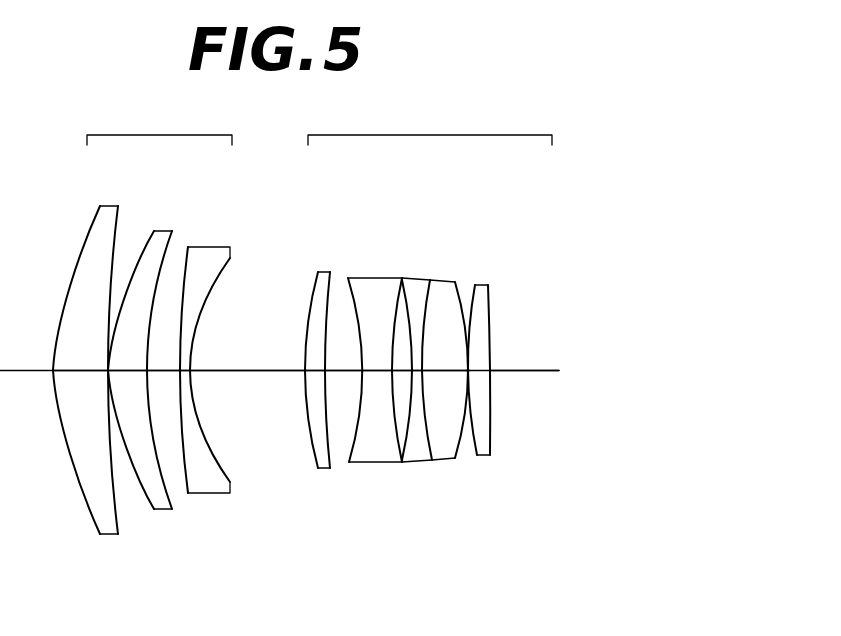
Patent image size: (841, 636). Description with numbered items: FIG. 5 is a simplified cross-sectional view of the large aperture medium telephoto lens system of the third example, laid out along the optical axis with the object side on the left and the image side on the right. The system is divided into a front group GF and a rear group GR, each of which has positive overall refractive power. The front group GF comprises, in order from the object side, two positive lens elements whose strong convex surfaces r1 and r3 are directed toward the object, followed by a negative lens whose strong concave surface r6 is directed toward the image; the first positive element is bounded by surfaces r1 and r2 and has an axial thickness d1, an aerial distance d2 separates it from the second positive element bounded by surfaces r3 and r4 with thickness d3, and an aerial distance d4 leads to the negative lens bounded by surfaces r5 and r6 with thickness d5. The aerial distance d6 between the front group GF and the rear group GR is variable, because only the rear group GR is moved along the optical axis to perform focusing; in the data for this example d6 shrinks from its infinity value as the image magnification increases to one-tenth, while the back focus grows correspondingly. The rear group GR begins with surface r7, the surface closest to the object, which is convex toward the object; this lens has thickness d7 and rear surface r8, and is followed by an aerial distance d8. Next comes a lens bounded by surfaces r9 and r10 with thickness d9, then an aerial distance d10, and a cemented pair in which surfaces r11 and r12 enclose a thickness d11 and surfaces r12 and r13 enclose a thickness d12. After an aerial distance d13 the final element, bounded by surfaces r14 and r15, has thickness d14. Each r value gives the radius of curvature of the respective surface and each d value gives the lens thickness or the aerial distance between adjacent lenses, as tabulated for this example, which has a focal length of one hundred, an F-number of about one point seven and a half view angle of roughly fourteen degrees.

The front group GF is at (159, 123).
The rear group GR is at (430, 123).
The first lens surface r1 is at (102, 206).
The second lens surface r2 is at (115, 207).
The third lens surface r3 is at (155, 230).
The fourth lens surface r4 is at (172, 229).
The fifth lens surface r5 is at (190, 246).
The sixth lens surface r6 is at (232, 247).
The seventh lens surface r7 is at (319, 271).
The eighth lens surface r8 is at (331, 271).
The ninth lens surface r9 is at (349, 277).
The tenth lens surface r10 is at (403, 278).
The eleventh lens surface r11 is at (403, 279).
The twelfth lens surface r12 is at (445, 280).
The thirteenth lens surface r13 is at (478, 282).
The fourteenth lens surface r14 is at (490, 282).
The fifteenth lens surface r15 is at (494, 284).
The thickness of first lens d1 is at (80, 371).
The aerial distance between first and second lenses d2 is at (98, 371).
The thickness of second lens d3 is at (132, 371).
The aerial distance between second and third lenses d4 is at (158, 371).
The thickness of third lens d5 is at (183, 371).
The variable aerial distance between front and rear groups d6 is at (248, 371).
The thickness of fourth lens d7 is at (315, 371).
The aerial distance between fourth and fifth lenses d8 is at (342, 371).
The thickness of fifth lens d9 is at (373, 371).
The aerial distance between fifth and sixth lenses d10 is at (397, 371).
The thickness of sixth lens d11 is at (417, 371).
The thickness of seventh lens d12 is at (445, 371).
The aerial distance between seventh and eighth lenses d13 is at (468, 376).
The thickness of eighth lens d14 is at (479, 458).